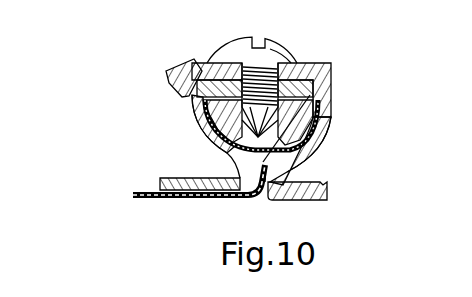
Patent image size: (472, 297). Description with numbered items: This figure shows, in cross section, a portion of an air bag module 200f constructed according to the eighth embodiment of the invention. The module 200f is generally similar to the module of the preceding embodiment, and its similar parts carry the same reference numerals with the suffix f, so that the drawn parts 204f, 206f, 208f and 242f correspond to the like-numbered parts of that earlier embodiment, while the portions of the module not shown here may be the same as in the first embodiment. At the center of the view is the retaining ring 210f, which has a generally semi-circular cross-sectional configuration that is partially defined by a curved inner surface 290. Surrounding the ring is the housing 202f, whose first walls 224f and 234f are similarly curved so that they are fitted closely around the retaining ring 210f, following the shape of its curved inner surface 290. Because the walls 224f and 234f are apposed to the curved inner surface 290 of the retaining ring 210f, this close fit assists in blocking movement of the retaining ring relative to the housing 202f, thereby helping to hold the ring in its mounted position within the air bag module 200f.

The air bag module 200f is at (378, 64).
The housing 202f is at (136, 75).
The base plate 204f is at (333, 193).
The panel 206f is at (152, 176).
The sheet 208f is at (143, 199).
The retaining ring 210f is at (332, 116).
The first wall 224f is at (200, 132).
The first wall 234f is at (311, 150).
The screw 242f is at (271, 41).
The curved inner surface 290 is at (230, 147).